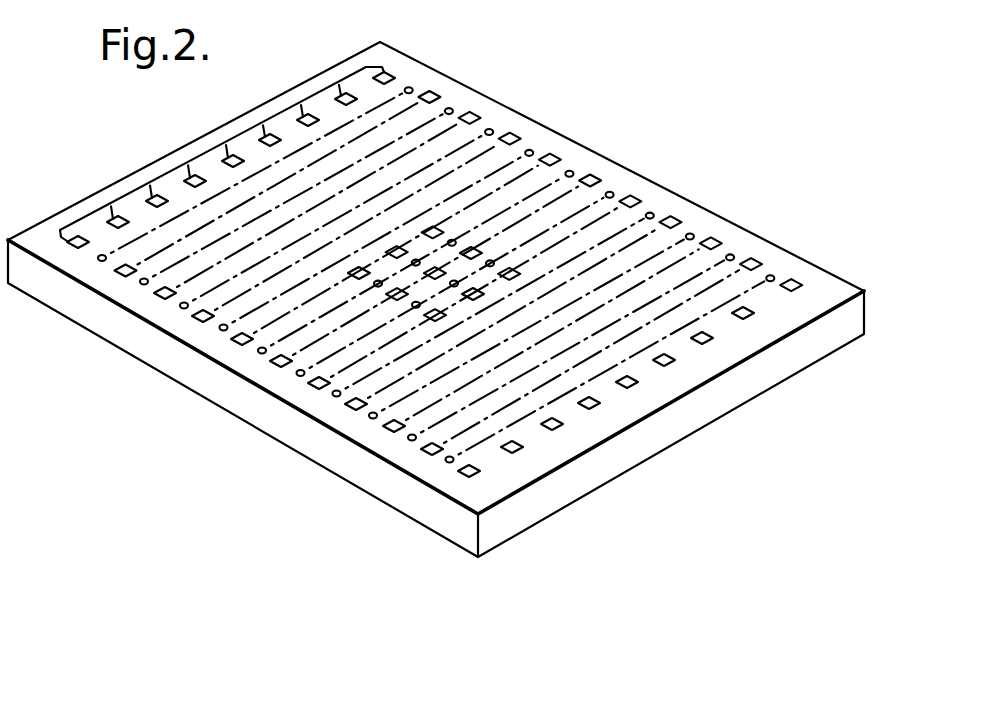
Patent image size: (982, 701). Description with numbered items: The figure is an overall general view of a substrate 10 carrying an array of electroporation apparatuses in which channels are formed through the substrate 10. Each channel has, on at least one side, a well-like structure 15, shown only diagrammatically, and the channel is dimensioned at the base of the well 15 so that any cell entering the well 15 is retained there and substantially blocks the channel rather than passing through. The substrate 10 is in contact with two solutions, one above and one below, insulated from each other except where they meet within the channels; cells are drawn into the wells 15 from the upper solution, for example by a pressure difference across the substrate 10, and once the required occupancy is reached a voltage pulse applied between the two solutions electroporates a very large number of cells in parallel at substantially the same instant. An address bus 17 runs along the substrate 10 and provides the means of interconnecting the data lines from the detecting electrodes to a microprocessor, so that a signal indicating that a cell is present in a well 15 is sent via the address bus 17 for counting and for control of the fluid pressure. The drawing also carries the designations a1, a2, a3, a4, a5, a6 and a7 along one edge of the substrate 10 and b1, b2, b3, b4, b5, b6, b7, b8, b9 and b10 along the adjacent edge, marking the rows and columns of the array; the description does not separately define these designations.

The substrate 10 is at (430, 513).
The well-like structure 15 is at (105, 262).
The address bus 17 is at (74, 248).
The terminal a1 is at (377, 66).
The terminal a2 is at (339, 86).
The terminal a3 is at (301, 106).
The terminal a4 is at (263, 126).
The terminal a5 is at (226, 146).
The terminal a6 is at (188, 166).
The terminal a7 is at (150, 186).
The terminal b1 is at (407, 87).
The terminal b2 is at (447, 108).
The terminal b3 is at (487, 129).
The terminal b4 is at (527, 150).
The terminal b5 is at (567, 171).
The terminal b6 is at (608, 192).
The terminal b7 is at (648, 213).
The terminal b8 is at (688, 234).
The terminal b9 is at (728, 254).
The terminal b10 is at (768, 275).